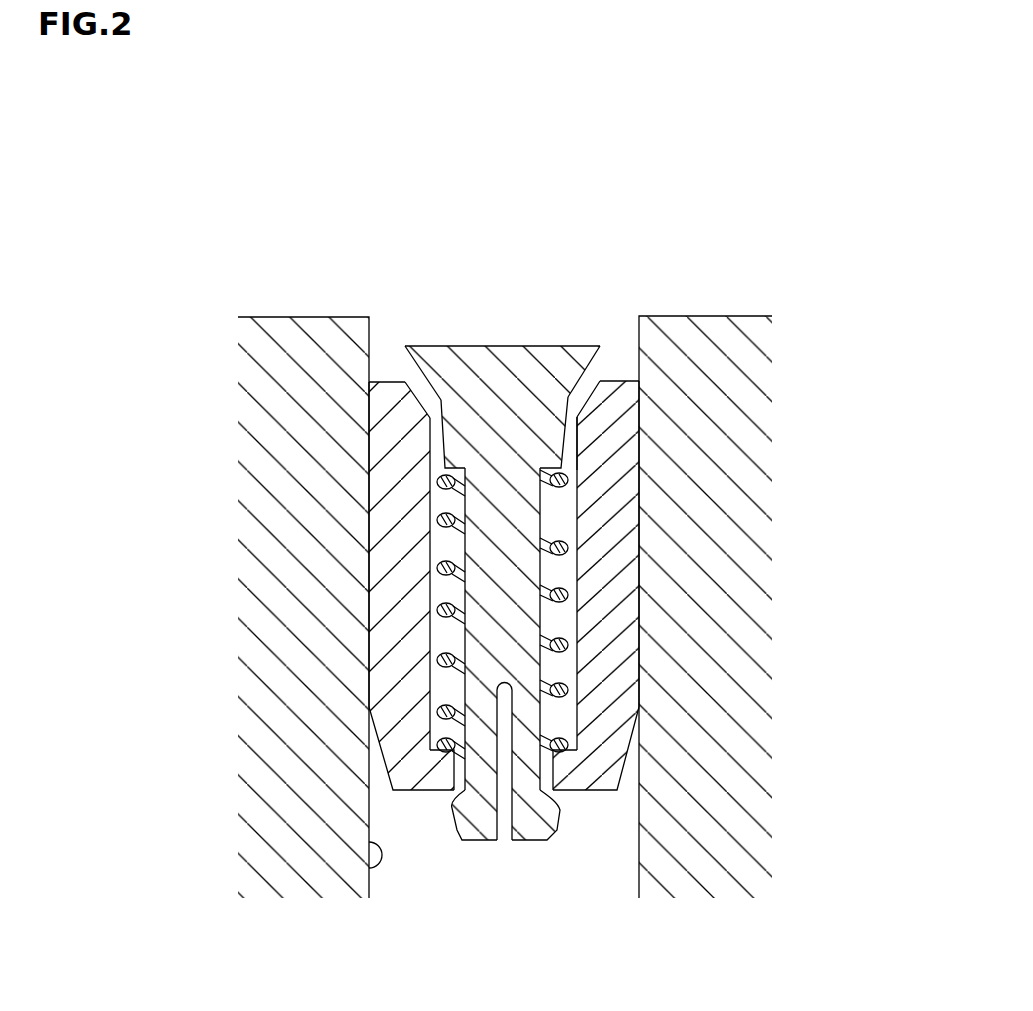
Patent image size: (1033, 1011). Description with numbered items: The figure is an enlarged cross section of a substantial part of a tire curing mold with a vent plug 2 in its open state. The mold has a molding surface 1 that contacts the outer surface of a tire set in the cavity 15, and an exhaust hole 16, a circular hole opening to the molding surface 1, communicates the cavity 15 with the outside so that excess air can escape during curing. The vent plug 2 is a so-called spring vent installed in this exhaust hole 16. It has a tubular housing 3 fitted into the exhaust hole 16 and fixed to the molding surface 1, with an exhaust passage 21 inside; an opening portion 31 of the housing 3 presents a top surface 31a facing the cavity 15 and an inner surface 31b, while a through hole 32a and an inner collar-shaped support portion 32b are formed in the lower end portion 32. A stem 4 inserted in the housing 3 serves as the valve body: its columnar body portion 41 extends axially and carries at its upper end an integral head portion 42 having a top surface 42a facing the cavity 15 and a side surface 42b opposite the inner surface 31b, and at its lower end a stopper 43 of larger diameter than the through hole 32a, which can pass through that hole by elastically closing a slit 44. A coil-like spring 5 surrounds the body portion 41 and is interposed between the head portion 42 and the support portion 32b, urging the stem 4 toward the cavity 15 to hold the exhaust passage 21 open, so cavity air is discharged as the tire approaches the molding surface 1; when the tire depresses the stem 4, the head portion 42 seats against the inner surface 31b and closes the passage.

The molding surface 1 is at (486, 556).
The vent plug 2 is at (589, 201).
The tubular housing 3 is at (499, 626).
The stem 4 is at (511, 616).
The spring 5 is at (430, 663).
The cavity 15 is at (522, 217).
The exhaust hole 16 is at (370, 870).
The exhaust passage 21 is at (577, 425).
The opening portion 31 is at (399, 488).
The top surface 31a is at (377, 380).
The inner surface 31b is at (403, 427).
The lower end portion 32 is at (416, 845).
The through hole 32a is at (455, 758).
The support portion 32b is at (557, 752).
The body portion 41 is at (520, 577).
The head portion 42 is at (531, 324).
The top surface 42a is at (547, 345).
The side surface 42b is at (604, 345).
The stopper 43 is at (475, 842).
The slit 44 is at (505, 832).